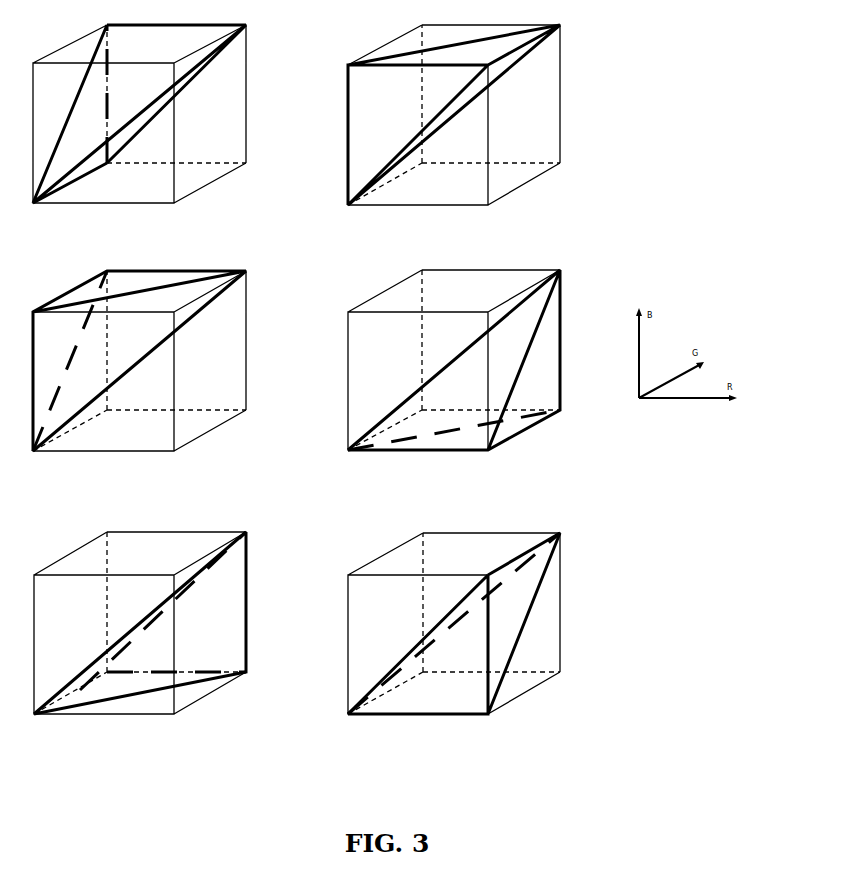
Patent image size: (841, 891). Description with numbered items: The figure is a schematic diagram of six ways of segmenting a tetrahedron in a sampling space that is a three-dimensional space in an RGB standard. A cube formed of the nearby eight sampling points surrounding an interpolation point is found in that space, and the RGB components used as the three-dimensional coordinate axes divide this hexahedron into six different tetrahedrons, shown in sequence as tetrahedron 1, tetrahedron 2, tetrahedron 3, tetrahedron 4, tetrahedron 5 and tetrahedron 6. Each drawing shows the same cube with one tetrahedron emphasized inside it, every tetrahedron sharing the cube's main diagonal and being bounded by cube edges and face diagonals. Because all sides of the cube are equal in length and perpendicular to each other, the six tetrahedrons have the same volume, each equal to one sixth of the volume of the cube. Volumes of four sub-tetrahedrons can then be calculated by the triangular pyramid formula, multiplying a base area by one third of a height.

The tetrahedron 1 is at (139, 138).
The tetrahedron 2 is at (454, 136).
The tetrahedron 3 is at (139, 385).
The tetrahedron 4 is at (454, 382).
The tetrahedron 5 is at (140, 645).
The tetrahedron 6 is at (454, 647).